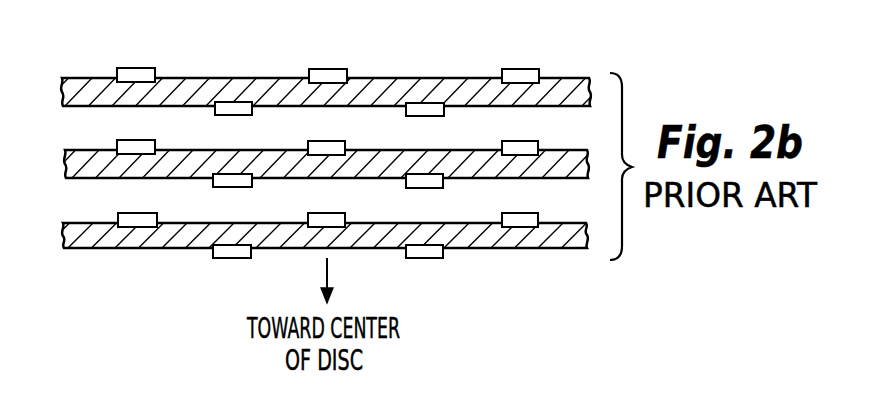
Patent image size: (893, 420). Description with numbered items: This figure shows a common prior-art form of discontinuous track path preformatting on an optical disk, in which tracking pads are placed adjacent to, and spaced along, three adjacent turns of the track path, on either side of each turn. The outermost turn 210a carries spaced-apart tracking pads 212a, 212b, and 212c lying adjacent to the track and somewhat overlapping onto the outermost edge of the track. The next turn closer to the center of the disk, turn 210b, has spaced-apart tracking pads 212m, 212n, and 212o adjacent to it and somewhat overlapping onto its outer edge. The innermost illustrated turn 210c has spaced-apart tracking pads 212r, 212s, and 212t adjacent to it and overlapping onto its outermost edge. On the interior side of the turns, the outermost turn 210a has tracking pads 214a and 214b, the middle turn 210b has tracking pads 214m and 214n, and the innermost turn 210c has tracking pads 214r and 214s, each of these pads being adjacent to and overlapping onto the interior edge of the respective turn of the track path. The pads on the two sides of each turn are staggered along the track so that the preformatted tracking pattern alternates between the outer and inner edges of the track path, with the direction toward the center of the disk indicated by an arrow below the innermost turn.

The outermost turn 210a is at (76, 78).
The turn 210b is at (118, 178).
The innermost turn 210c is at (115, 250).
The tracking pad 212a is at (138, 69).
The tracking pad 212b is at (328, 70).
The tracking pad 212c is at (523, 70).
The tracking pad 212m is at (124, 140).
The tracking pad 212n is at (335, 141).
The tracking pad 212o is at (528, 141).
The tracking pad 212r is at (150, 213).
The tracking pad 212s is at (335, 213).
The tracking pad 212t is at (528, 213).
The tracking pad 214a is at (225, 115).
The tracking pad 214b is at (432, 116).
The tracking pad 214m is at (243, 189).
The tracking pad 214n is at (432, 189).
The tracking pad 214r is at (224, 258).
The tracking pad 214s is at (420, 258).